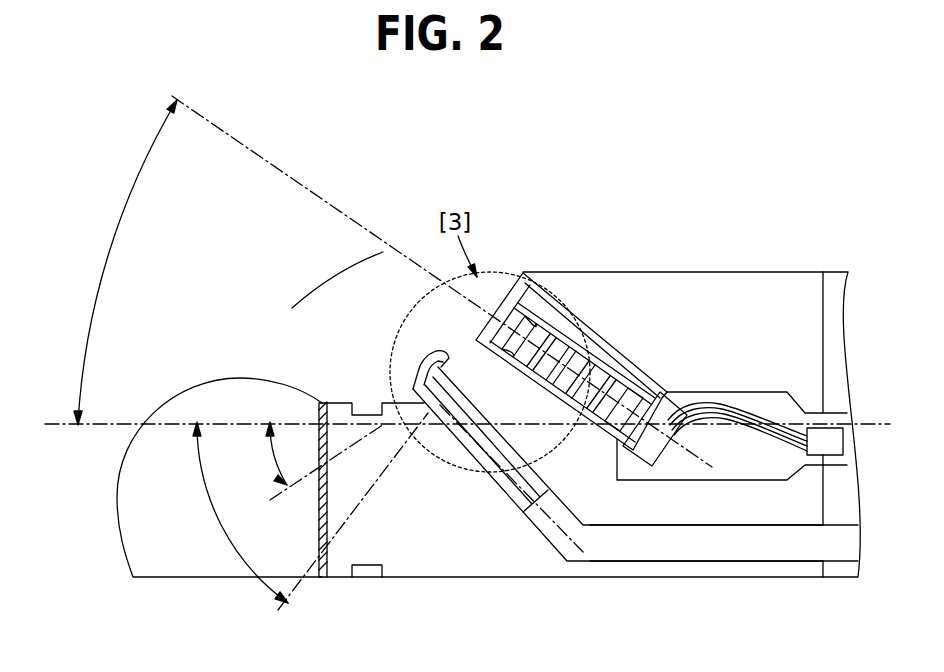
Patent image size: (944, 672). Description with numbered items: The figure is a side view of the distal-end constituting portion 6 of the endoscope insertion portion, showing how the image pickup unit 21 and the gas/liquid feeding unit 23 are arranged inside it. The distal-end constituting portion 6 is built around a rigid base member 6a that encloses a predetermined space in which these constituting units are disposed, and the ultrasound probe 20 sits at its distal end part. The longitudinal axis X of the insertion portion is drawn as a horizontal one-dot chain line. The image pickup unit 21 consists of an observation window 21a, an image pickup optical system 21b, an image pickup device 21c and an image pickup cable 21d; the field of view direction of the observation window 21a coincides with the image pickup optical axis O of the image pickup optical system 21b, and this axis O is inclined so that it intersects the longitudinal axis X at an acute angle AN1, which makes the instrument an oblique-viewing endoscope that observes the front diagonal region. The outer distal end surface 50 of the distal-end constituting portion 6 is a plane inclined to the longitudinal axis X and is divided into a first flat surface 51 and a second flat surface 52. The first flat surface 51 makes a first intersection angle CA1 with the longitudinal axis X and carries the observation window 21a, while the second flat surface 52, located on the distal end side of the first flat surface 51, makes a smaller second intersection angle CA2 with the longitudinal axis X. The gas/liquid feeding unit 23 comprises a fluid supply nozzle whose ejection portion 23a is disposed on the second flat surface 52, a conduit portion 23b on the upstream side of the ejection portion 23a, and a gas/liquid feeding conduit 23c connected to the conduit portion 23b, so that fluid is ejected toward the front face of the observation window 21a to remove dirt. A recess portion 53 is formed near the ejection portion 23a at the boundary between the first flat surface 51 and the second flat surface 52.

The distal-end constituting portion 6 is at (412, 220).
The base member 6a is at (806, 271).
The ultrasound probe 20 is at (243, 380).
The image pickup unit 21 is at (502, 196).
The observation window 21a is at (533, 322).
The image pickup optical system 21b is at (590, 350).
The image pickup device 21c is at (667, 390).
The image pickup cable 21d is at (820, 417).
The gas/liquid feeding unit 23 is at (383, 612).
The ejection portion 23a is at (437, 430).
The conduit portion 23b is at (487, 457).
The gas/liquid feeding conduit 23c is at (597, 542).
The distal end surface 50 is at (337, 278).
The first flat surface 51 is at (467, 337).
The second flat surface 52 is at (410, 400).
The recess portion 53 is at (452, 367).
The image pickup optical axis O is at (278, 168).
The longitudinal axis X is at (130, 424).
The acute angle AN1 is at (124, 214).
The first intersection angle CA1 is at (226, 534).
The second intersection angle CA2 is at (272, 445).